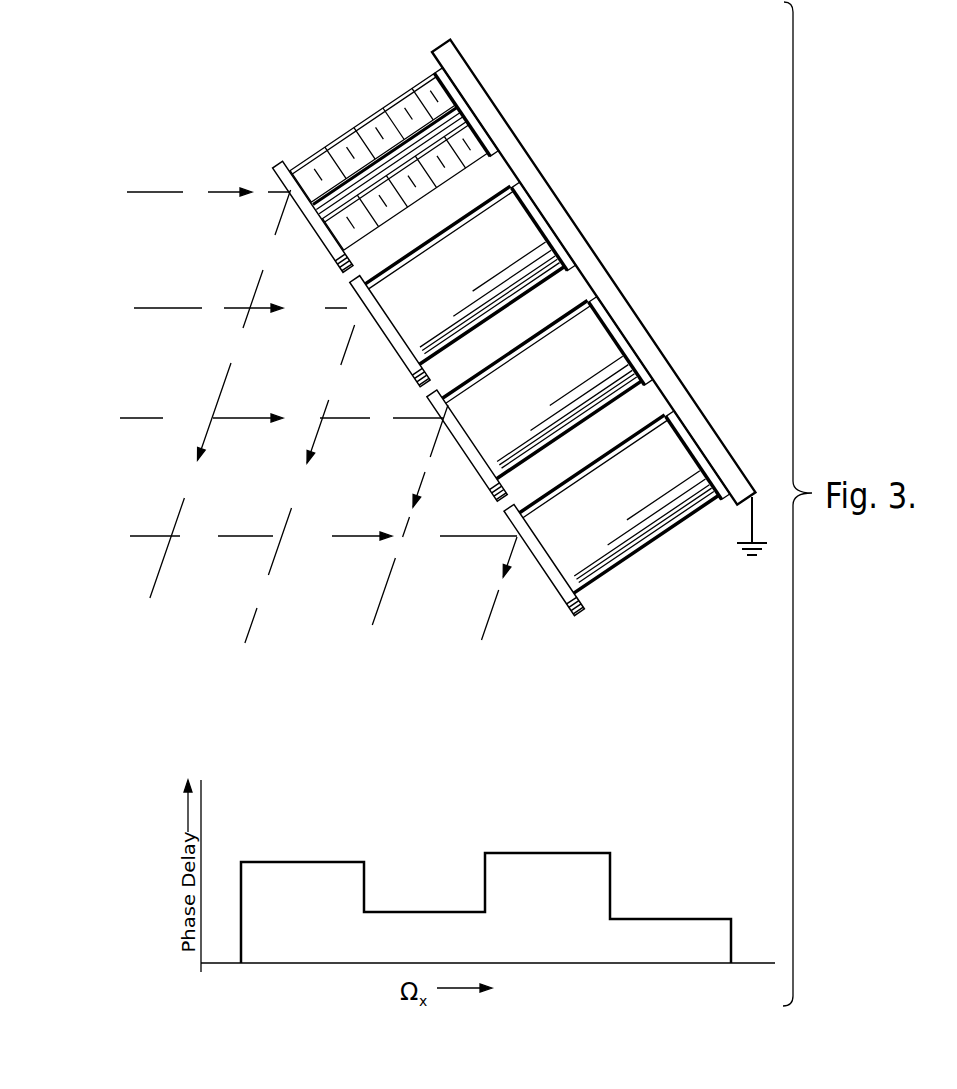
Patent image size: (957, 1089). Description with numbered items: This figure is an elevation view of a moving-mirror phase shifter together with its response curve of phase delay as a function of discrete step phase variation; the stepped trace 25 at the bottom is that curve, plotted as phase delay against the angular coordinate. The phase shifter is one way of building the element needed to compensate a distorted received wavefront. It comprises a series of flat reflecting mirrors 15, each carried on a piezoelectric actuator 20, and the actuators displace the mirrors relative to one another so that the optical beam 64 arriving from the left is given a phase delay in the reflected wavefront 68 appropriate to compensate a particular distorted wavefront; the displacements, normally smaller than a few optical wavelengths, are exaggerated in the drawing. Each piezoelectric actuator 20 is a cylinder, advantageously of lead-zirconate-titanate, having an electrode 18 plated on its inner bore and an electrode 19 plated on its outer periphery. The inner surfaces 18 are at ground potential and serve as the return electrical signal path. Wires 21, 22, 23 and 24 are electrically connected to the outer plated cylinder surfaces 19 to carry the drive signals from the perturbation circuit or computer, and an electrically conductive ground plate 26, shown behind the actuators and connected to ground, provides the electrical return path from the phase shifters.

The flat reflecting mirror 15 is at (281, 165).
The inner electrode 18 is at (413, 122).
The outer electrode 19 is at (340, 140).
The piezoelectric actuator 20 is at (438, 70).
The wire 21 is at (494, 153).
The wire 22 is at (572, 268).
The wire 23 is at (649, 382).
The wire 24 is at (726, 497).
The phase delay step function 25 is at (612, 855).
The electrically conductive ground plate 26 is at (478, 88).
The optical beam 64 is at (138, 308).
The reflected wavefront 68 is at (255, 616).